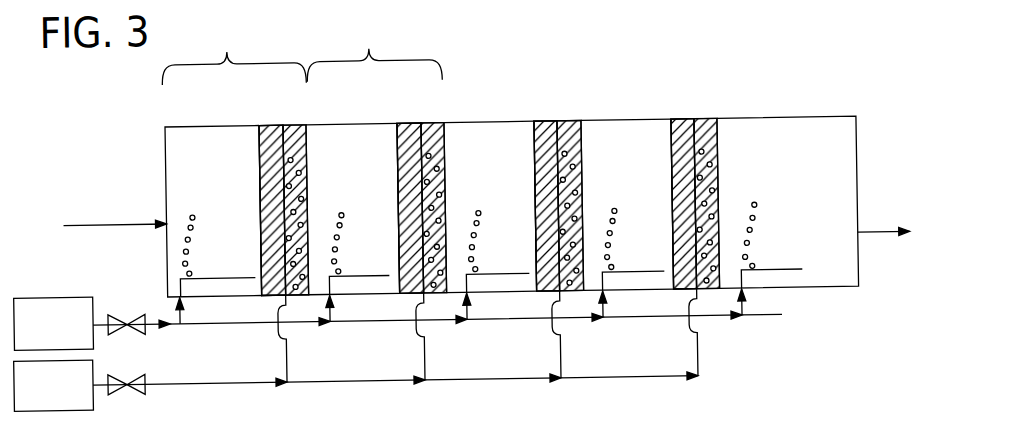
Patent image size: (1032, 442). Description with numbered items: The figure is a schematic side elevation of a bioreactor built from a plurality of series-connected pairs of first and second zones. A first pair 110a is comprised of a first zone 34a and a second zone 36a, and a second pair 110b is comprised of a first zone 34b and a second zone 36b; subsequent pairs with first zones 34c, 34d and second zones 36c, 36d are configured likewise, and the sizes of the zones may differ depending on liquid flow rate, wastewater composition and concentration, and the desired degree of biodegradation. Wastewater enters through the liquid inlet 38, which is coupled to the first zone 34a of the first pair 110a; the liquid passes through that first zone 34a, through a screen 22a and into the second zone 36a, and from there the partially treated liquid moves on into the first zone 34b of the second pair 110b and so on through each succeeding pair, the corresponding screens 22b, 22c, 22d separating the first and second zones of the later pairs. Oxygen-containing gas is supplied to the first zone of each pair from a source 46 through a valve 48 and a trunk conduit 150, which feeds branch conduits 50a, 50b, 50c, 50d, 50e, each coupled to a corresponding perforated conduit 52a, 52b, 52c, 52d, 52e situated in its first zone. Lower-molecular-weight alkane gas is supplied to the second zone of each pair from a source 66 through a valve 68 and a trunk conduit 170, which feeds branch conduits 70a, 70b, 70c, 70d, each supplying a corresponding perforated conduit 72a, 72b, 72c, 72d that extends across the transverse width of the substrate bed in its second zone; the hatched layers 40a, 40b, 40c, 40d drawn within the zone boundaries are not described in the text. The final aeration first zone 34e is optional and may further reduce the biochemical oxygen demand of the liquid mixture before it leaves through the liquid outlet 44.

The first pair 110a is at (233, 56).
The second pair 110b is at (374, 50).
The screen 22a is at (259, 176).
The screen 22b is at (397, 175).
The screen 22c is at (534, 168).
The screen 22d is at (671, 168).
The first zone 34a is at (202, 127).
The first zone 34b is at (358, 127).
The first zone 34c is at (493, 127).
The first zone 34d is at (640, 127).
The first zone 34e is at (805, 127).
The second zone 36a is at (272, 127).
The second zone 36b is at (417, 127).
The second zone 36c is at (560, 127).
The second zone 36d is at (707, 127).
The gas permeable membrane 40a is at (283, 144).
The gas permeable membrane 40b is at (421, 146).
The gas permeable membrane 40c is at (557, 146).
The gas permeable membrane 40d is at (694, 139).
The perforated conduit 72a is at (283, 182).
The perforated conduit 72b is at (421, 182).
The perforated conduit 72c is at (557, 178).
The perforated conduit 72d is at (694, 173).
The perforated conduit 52a is at (212, 279).
The perforated conduit 52b is at (353, 279).
The perforated conduit 52c is at (492, 279).
The perforated conduit 52d is at (627, 279).
The perforated conduit 52e is at (770, 279).
The branch conduit 50a is at (178, 312).
The branch conduit 50b is at (328, 313).
The branch conduit 50c is at (465, 314).
The branch conduit 50d is at (601, 316).
The branch conduit 50e is at (740, 312).
The branch conduit 70a is at (284, 362).
The branch conduit 70b is at (421, 356).
The branch conduit 70c is at (557, 361).
The branch conduit 70d is at (694, 360).
The liquid inlet 38 is at (136, 223).
The liquid outlet 44 is at (866, 246).
The source 46 is at (73, 296).
The valve 48 is at (130, 314).
The source 66 is at (90, 369).
The valve 68 is at (113, 394).
The trunk conduit 150 is at (150, 328).
The trunk conduit 170 is at (186, 385).